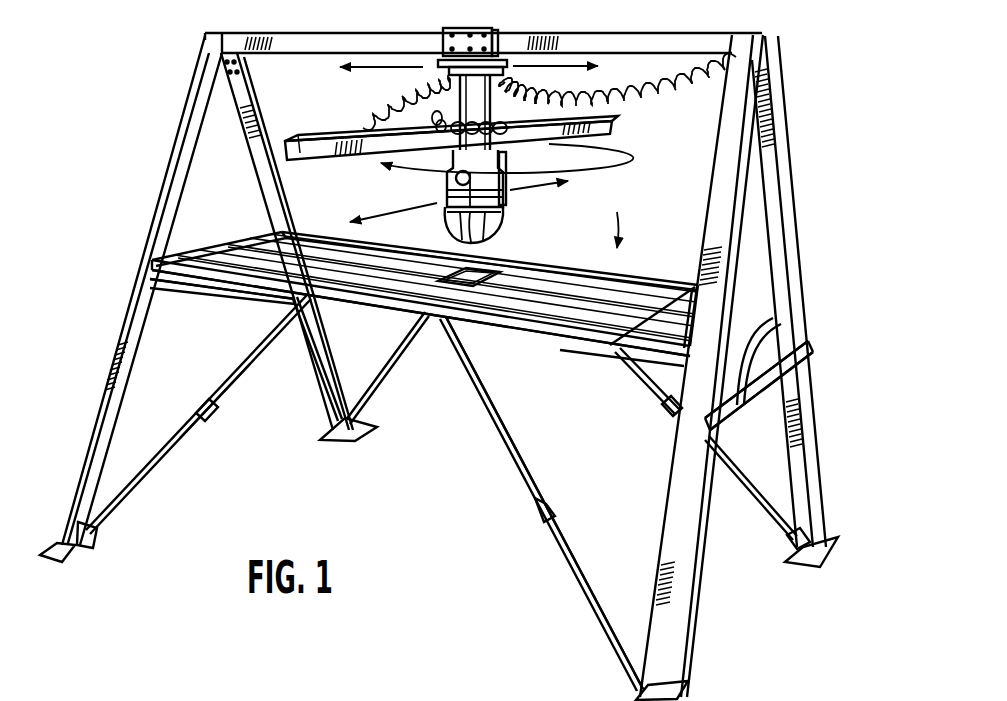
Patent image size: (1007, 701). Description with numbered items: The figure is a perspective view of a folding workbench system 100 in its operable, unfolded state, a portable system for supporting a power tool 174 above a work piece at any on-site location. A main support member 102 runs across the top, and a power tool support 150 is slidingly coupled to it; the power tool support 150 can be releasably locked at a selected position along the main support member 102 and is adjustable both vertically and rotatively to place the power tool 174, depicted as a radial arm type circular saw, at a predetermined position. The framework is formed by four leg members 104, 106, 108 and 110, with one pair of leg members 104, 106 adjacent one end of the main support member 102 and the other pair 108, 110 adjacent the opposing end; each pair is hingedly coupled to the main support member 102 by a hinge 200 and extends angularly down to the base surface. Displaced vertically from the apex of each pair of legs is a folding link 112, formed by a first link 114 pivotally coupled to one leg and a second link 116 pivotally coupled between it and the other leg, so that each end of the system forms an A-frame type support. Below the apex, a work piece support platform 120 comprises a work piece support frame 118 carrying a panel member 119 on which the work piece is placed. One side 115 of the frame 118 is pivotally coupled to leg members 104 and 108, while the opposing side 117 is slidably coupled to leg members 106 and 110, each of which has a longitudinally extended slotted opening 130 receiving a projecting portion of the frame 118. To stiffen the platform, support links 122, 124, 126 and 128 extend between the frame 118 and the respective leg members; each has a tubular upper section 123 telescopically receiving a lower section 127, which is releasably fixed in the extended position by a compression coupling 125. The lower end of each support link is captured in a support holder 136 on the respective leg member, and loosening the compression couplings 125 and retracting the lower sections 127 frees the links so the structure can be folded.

The folding workbench system 100 is at (797, 71).
The main support member 102 is at (577, 40).
The leg member 104 is at (818, 450).
The leg member 106 is at (680, 677).
The leg member 108 is at (330, 405).
The leg member 110 is at (68, 482).
The folding link 112 is at (190, 314).
The first link 114 is at (806, 356).
The side of frame 115 is at (425, 308).
The second link 116 is at (768, 352).
The opposing side of frame 117 is at (258, 286).
The work piece support frame 118 is at (512, 330).
The panel member 119 is at (567, 298).
The work piece support platform 120 is at (615, 212).
The support link 122 is at (614, 367).
The upper section 123 is at (262, 356).
The support link 124 is at (502, 459).
The compression coupling 125 is at (214, 418).
The support link 126 is at (398, 378).
The lower section 127 is at (157, 468).
The support link 128 is at (201, 455).
The longitudinally extended slotted opening 130 is at (112, 387).
The support holder 136 is at (97, 545).
The power tool support 150 is at (395, 84).
The power tool 174 is at (500, 222).
The hinge 200 is at (220, 95).